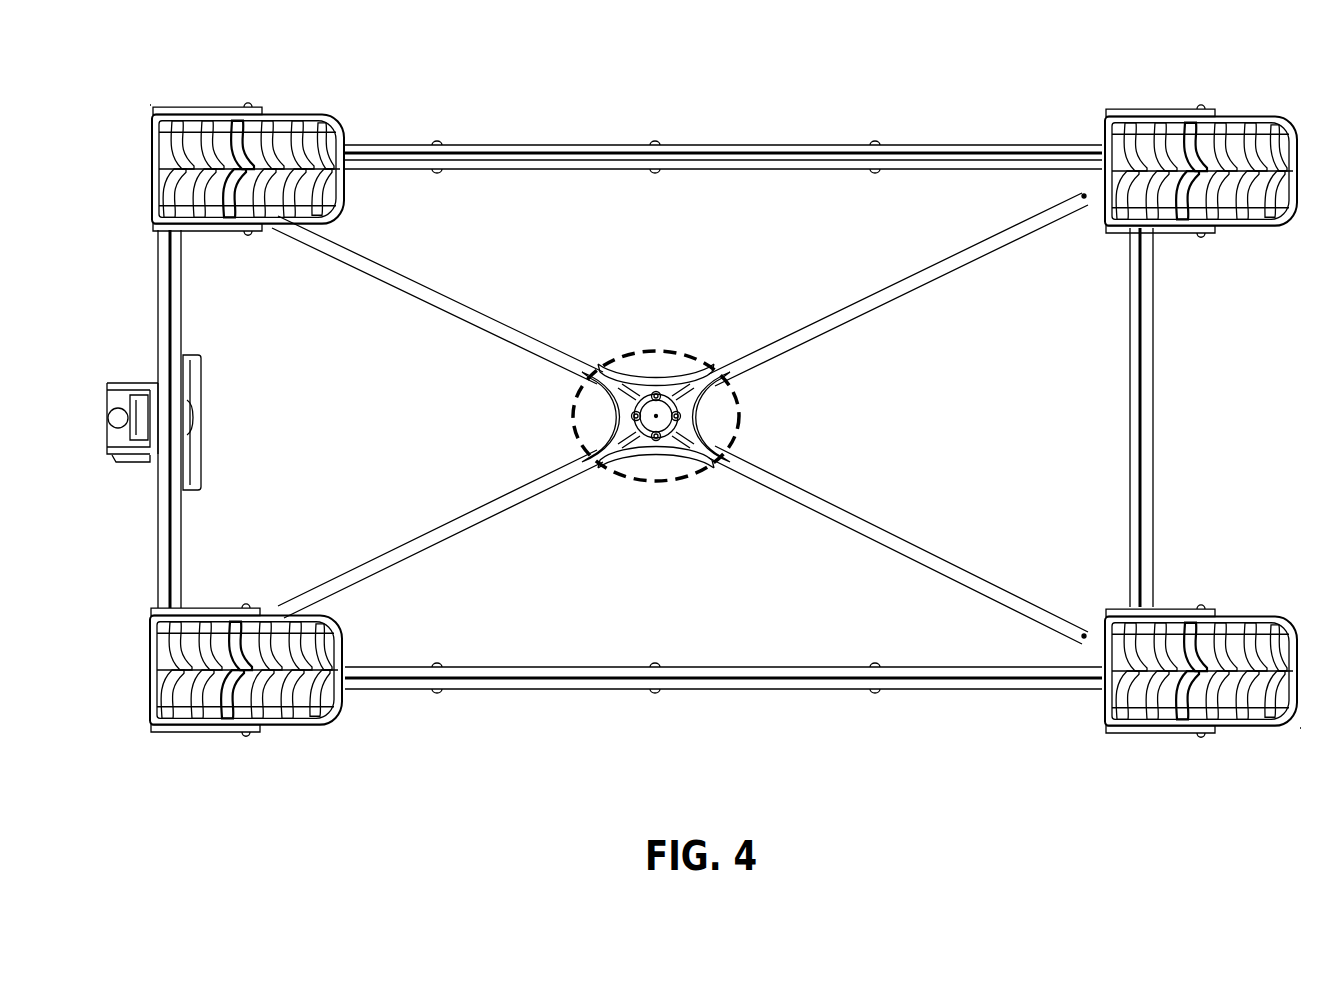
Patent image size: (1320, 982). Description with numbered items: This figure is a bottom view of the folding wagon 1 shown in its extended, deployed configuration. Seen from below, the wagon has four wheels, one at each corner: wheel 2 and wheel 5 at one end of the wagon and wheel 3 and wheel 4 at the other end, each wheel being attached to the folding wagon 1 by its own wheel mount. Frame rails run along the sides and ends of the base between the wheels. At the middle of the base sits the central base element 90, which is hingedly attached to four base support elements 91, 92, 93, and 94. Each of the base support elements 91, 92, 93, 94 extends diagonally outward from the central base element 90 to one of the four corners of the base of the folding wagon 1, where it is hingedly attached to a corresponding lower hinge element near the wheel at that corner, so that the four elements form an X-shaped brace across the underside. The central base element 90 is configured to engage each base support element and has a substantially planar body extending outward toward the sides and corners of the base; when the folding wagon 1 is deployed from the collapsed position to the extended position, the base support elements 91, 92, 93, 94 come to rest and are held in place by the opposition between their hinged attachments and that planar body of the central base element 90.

The folding wagon 1 is at (787, 72).
The wheel 2 is at (346, 112).
The wheel 3 is at (345, 632).
The wheel 4 is at (1113, 637).
The wheel 5 is at (1112, 137).
The central base element 90 is at (577, 413).
The base support element 91 is at (455, 303).
The base support element 92 is at (440, 536).
The base support element 93 is at (845, 518).
The base support element 94 is at (838, 322).